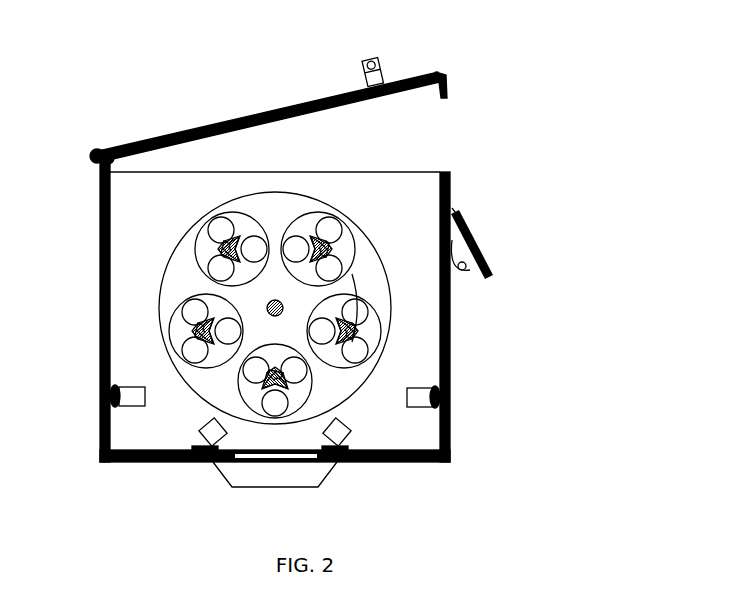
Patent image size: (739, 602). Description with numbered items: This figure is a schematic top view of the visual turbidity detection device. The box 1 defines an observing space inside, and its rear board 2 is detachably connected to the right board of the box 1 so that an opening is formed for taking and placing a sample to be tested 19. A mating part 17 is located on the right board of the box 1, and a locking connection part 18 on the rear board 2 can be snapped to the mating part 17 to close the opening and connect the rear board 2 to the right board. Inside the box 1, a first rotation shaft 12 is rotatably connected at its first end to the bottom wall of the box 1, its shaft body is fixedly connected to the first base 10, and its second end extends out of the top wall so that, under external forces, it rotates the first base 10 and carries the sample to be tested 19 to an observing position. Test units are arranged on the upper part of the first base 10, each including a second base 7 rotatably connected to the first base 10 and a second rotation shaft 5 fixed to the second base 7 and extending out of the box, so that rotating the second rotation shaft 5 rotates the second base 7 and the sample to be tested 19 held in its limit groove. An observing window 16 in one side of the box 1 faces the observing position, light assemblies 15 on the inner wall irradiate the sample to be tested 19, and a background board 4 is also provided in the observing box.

The box 1 is at (100, 200).
The rear board 2 is at (265, 115).
The background board 4 is at (332, 443).
The second rotation shaft 5 is at (355, 328).
The second base 7 is at (168, 325).
The first base 10 is at (161, 270).
The first rotation shaft 12 is at (280, 318).
The light assembly 15 is at (106, 400).
The observing window 16 is at (223, 473).
The mating part 17 is at (492, 258).
The locking connection part 18 is at (363, 62).
The sample to be tested 19 is at (387, 350).